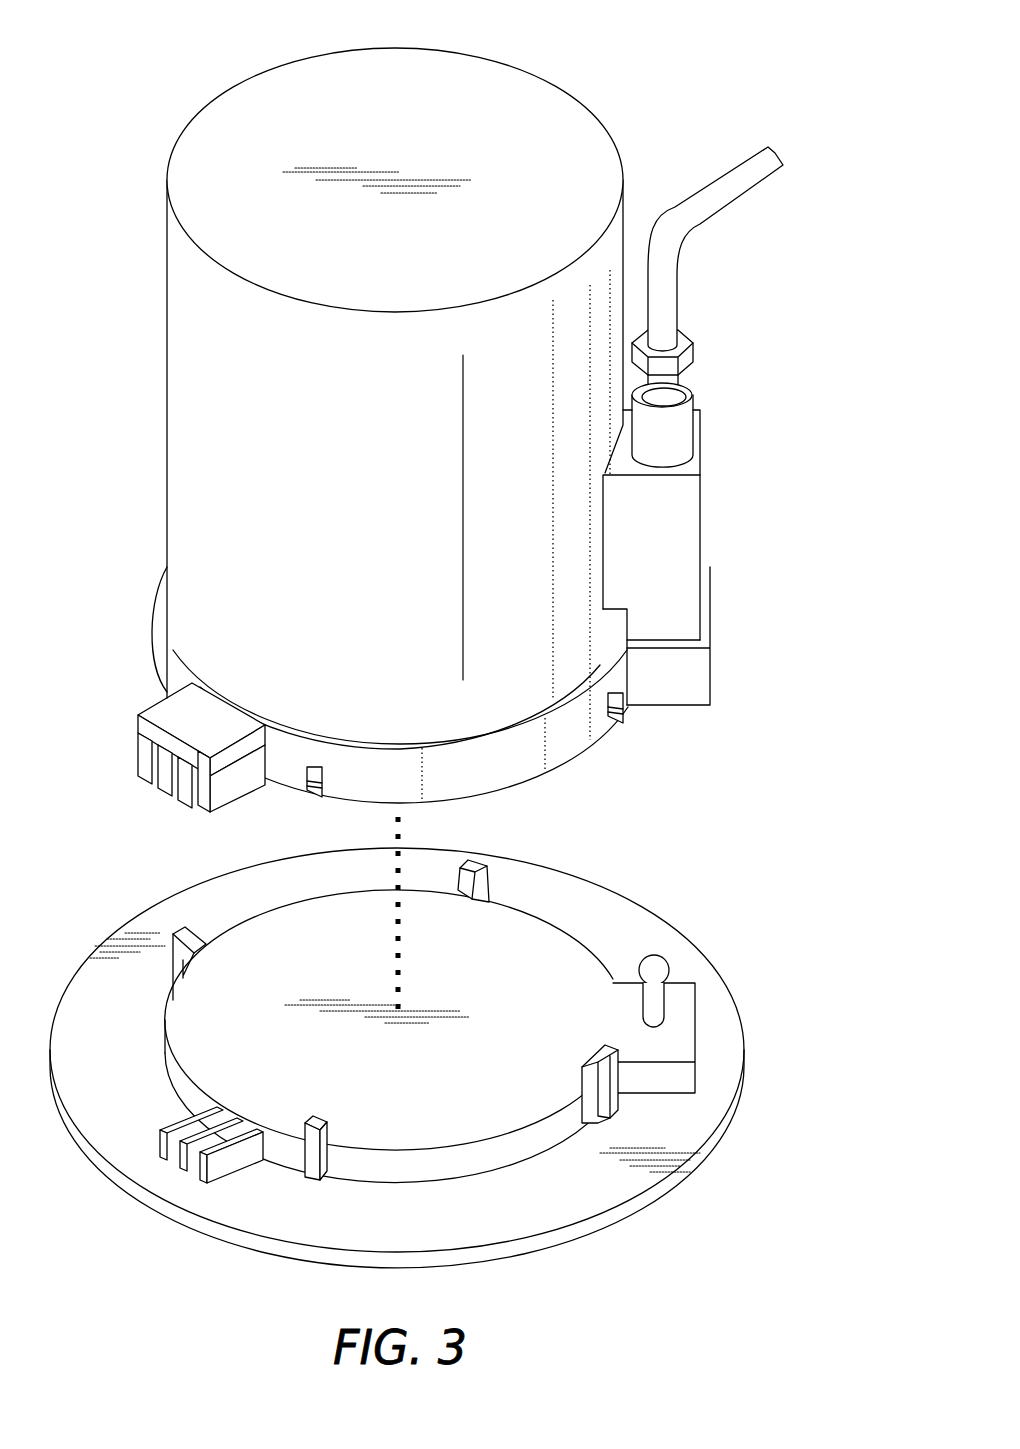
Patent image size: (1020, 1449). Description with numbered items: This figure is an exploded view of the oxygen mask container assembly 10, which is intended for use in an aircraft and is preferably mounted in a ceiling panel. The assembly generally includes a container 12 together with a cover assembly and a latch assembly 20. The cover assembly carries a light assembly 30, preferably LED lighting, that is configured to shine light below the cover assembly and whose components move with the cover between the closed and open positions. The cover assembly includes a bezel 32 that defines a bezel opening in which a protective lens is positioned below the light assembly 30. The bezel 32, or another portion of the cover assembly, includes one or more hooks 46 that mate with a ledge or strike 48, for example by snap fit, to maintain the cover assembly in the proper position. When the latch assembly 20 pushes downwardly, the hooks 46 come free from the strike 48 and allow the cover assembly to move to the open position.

The oxygen mask container assembly 10 is at (460, 428).
The container 12 is at (537, 123).
The latch assembly 20 is at (666, 546).
The light assembly 30 is at (437, 1053).
The bezel 32 is at (712, 1153).
The hooks 46 is at (470, 882).
The strike 48 is at (317, 795).